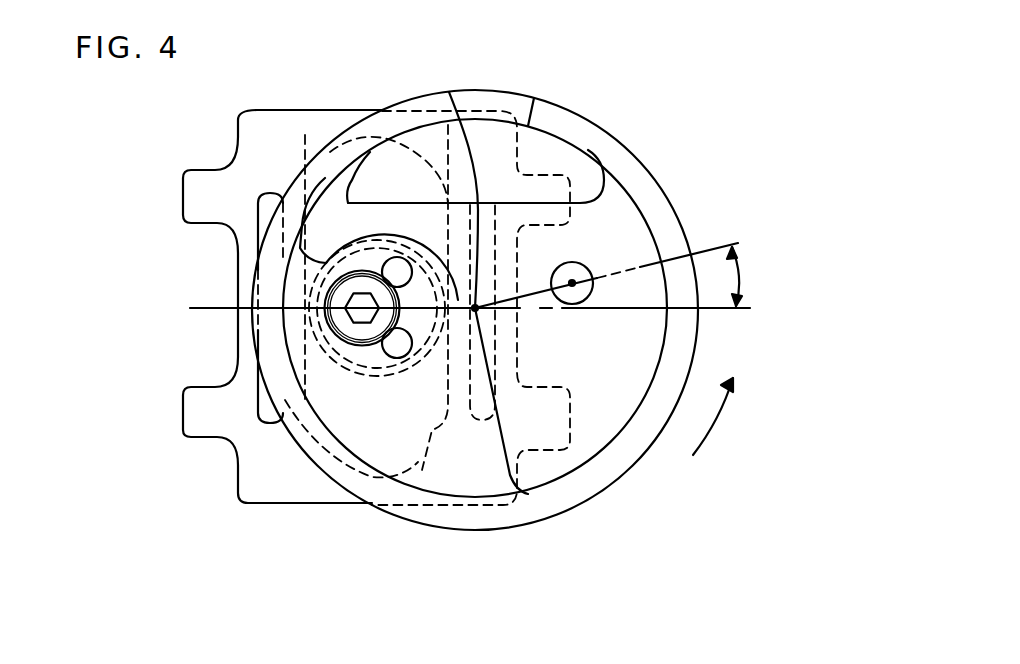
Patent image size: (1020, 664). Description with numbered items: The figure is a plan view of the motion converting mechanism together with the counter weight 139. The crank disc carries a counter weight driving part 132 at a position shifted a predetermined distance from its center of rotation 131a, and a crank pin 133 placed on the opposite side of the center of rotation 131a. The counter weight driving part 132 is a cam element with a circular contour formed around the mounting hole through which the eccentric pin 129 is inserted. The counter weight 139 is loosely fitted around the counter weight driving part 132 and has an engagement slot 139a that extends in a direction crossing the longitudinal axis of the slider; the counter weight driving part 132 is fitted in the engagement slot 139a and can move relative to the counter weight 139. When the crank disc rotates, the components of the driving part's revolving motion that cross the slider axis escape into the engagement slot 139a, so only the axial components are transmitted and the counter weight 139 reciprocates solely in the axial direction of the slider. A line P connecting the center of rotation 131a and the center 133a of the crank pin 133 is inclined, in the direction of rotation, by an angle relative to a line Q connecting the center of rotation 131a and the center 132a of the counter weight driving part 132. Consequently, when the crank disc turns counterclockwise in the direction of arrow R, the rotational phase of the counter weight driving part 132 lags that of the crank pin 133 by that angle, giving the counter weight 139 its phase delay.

The eccentric pin 129 is at (325, 285).
The center of rotation 131a is at (449, 92).
The counter weight driving part 132 is at (383, 376).
The center of the counter weight driving part 132a is at (372, 315).
The crank pin 133 is at (573, 265).
The center of the crank pin 133a is at (582, 266).
The counter weight 139 is at (287, 125).
The engagement slot 139a is at (422, 470).
The line P is at (716, 245).
The line Q is at (222, 308).
The arrow R is at (730, 416).